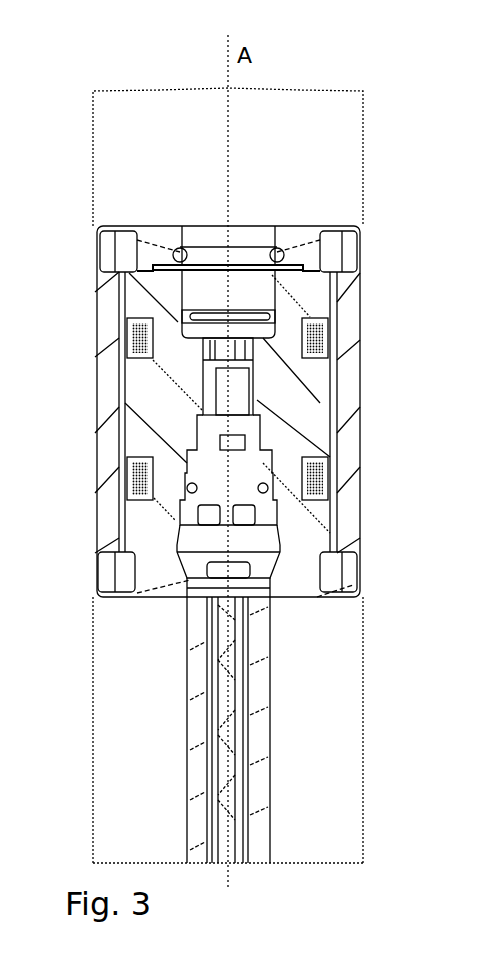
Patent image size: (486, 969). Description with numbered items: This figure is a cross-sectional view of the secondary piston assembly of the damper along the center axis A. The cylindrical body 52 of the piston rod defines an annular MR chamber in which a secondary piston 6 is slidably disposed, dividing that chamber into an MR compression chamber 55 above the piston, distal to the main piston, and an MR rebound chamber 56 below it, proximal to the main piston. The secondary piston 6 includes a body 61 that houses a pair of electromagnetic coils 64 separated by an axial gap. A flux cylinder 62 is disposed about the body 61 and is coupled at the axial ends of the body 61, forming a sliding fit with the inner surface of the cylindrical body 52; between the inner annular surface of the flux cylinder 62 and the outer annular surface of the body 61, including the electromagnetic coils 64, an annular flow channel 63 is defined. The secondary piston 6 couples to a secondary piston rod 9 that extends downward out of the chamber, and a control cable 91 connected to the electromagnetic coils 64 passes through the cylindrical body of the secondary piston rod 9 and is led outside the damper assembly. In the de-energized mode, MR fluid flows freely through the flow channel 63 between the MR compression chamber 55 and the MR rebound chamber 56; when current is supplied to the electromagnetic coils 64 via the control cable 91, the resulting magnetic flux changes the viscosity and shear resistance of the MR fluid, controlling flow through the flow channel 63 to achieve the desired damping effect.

The secondary piston 6 is at (305, 410).
The secondary piston rod 9 is at (197, 678).
The cylindrical body 52 is at (93, 828).
The MR compression chamber 55 is at (100, 152).
The MR rebound chamber 56 is at (100, 628).
The body 61 is at (150, 386).
The flux cylinder 62 is at (100, 314).
The annular flow channel 63 is at (130, 422).
The electromagnetic coils 64 is at (125, 342).
The control cable 91 is at (220, 735).